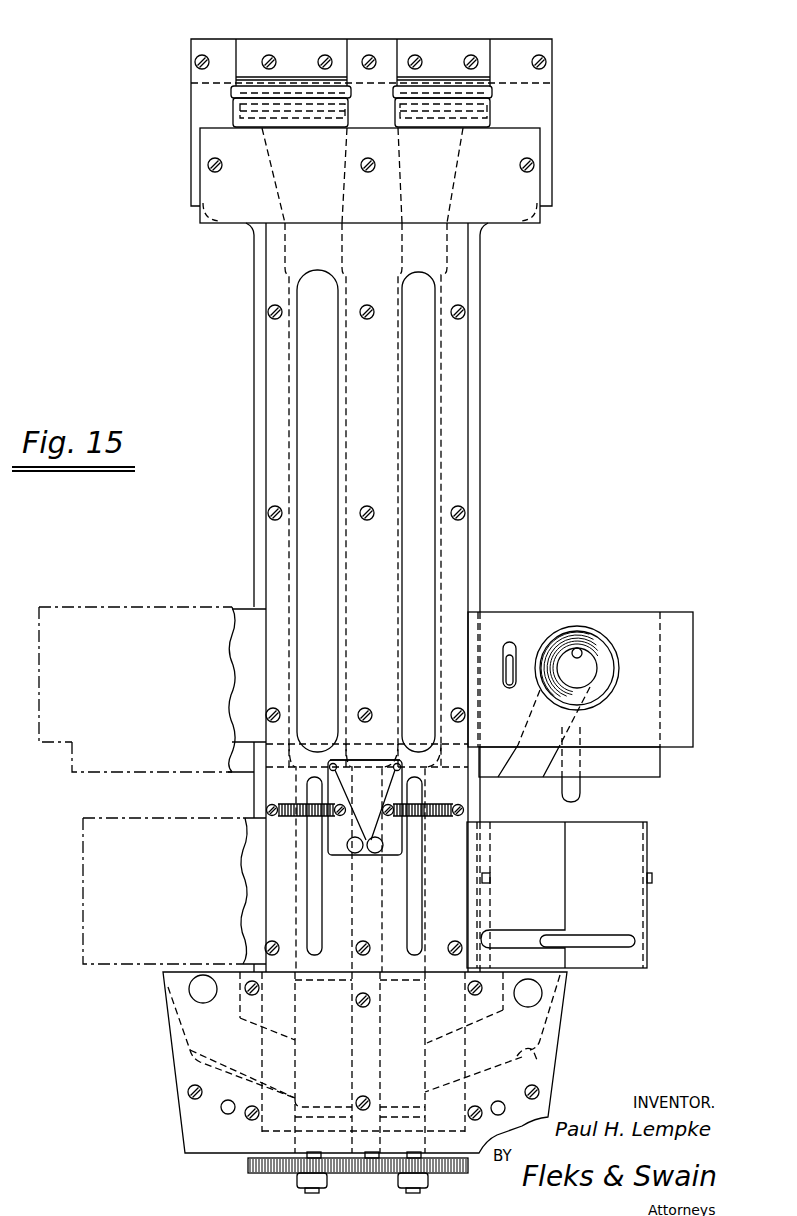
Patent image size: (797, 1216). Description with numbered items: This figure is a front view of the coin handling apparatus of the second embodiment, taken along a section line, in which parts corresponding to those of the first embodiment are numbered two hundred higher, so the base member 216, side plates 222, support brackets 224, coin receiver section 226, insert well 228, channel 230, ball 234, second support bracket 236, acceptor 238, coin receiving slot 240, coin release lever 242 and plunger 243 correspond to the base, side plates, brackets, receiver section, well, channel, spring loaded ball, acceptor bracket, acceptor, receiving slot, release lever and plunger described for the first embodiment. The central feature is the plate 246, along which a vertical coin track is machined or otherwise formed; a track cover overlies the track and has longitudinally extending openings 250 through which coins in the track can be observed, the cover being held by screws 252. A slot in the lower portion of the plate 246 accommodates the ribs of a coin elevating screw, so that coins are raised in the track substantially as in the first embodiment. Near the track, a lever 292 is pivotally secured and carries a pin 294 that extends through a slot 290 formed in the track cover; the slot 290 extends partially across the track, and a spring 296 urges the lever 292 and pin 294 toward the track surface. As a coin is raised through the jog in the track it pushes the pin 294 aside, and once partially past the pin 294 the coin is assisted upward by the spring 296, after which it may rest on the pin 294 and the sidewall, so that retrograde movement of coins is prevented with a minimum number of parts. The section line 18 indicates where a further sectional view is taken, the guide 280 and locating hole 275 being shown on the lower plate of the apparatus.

The section line 18- 18 is at (423, 182).
The shear head assembly 216 is at (521, 329).
The plate 246 is at (473, 413).
The longitudinally extending openings 250 is at (430, 650).
The mounting screws 252 is at (466, 515).
The slot 290 is at (384, 742).
The pin 294 is at (403, 762).
The lever 292 is at (383, 857).
The spring 296 is at (433, 820).
The cam housing block 224 is at (682, 670).
The spiral cam 228 is at (598, 692).
The cam pin 234 is at (581, 651).
The adjustment slot 242 is at (503, 683).
The cam follower links 230 is at (540, 713).
The bearing block 226 is at (665, 762).
The pin 243 is at (583, 788).
The frame side member 222 is at (508, 799).
The housing 238 is at (660, 922).
The slide member 236 is at (565, 882).
The base plate 240 is at (365, 1082).
The guide rib 280 is at (517, 1087).
The locating hole 275 is at (540, 1000).